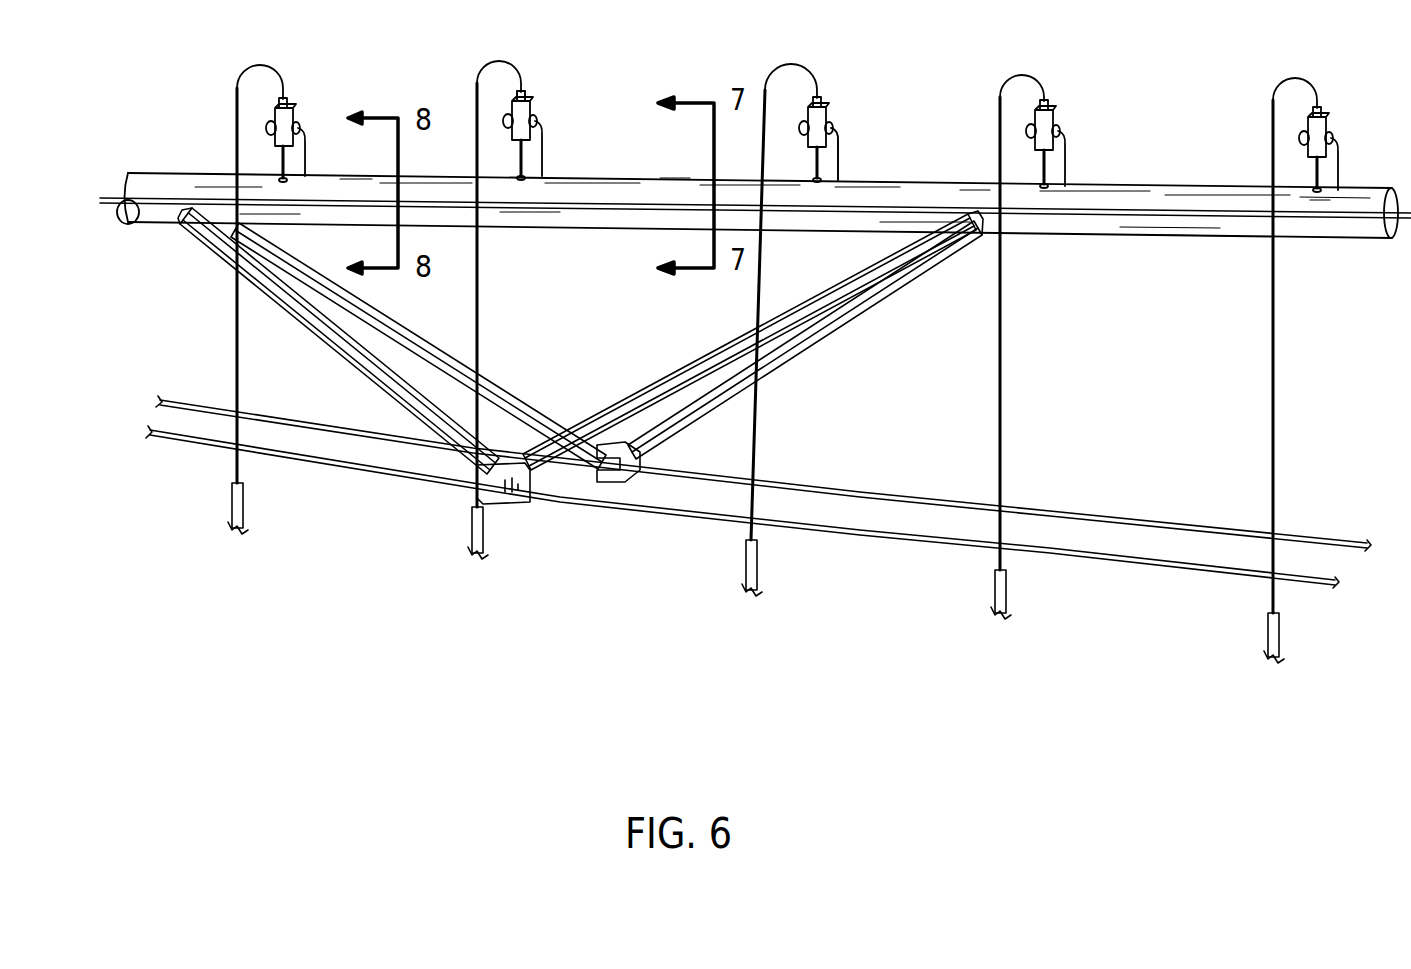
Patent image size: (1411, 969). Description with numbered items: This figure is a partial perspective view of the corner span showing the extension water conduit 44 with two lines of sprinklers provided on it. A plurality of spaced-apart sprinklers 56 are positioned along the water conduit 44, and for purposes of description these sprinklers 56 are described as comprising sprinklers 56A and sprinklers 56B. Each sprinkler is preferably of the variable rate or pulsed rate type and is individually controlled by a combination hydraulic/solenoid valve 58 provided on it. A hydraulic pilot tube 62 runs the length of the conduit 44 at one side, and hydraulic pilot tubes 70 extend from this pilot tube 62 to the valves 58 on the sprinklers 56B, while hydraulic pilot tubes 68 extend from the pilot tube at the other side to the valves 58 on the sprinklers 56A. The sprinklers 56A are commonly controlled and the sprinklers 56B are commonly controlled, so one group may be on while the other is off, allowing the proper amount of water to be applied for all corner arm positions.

The water conduit 44 is at (131, 171).
The second hydraulic pilot tube 62 is at (166, 199).
The combination hydraulic/solenoid valve 58 is at (1057, 103).
The hydraulic pilot tube 70 is at (544, 131).
The hydraulic pilot tube 68 is at (840, 151).
The sprinkler 56 is at (698, 573).
The sprinkler 56A is at (246, 490).
The sprinkler 56B is at (485, 497).